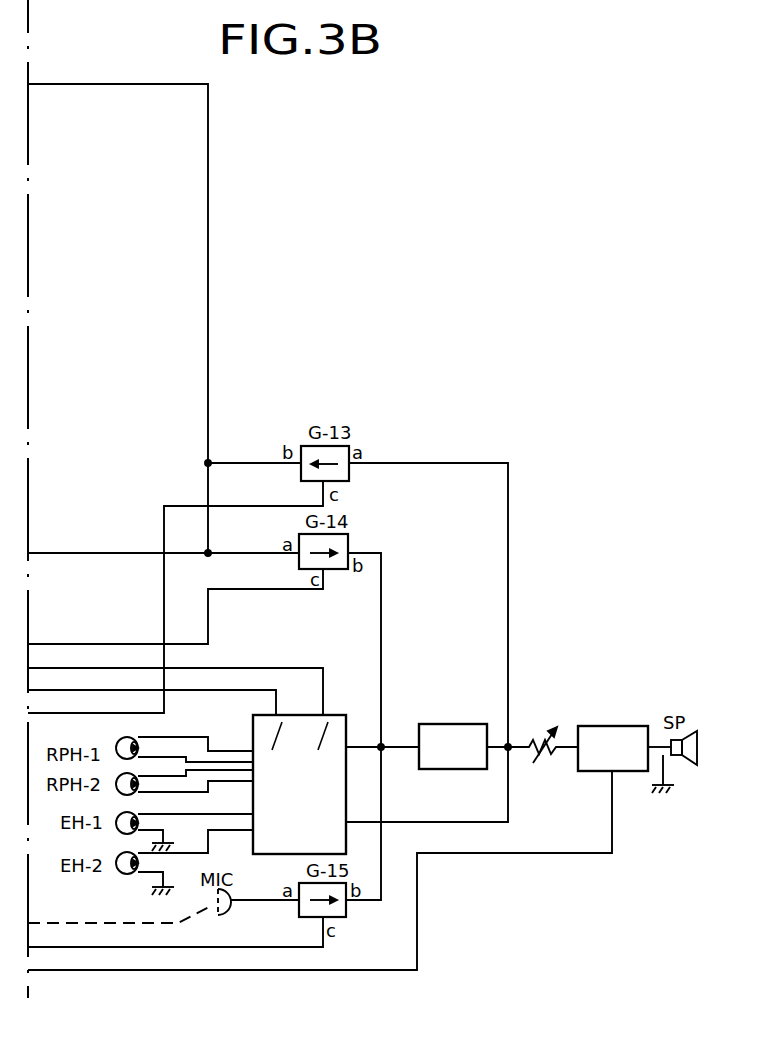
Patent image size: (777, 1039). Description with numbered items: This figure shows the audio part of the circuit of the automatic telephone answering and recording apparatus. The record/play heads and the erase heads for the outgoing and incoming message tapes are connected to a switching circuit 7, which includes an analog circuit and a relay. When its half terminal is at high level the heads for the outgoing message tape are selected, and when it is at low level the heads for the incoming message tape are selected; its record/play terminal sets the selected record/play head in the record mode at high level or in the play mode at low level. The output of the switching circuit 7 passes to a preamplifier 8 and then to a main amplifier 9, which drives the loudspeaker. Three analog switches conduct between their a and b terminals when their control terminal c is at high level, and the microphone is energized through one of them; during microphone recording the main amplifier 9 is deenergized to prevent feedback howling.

The switching circuit 7 is at (344, 714).
The preamplifier 8 is at (460, 724).
The main amplifier 9 is at (617, 726).